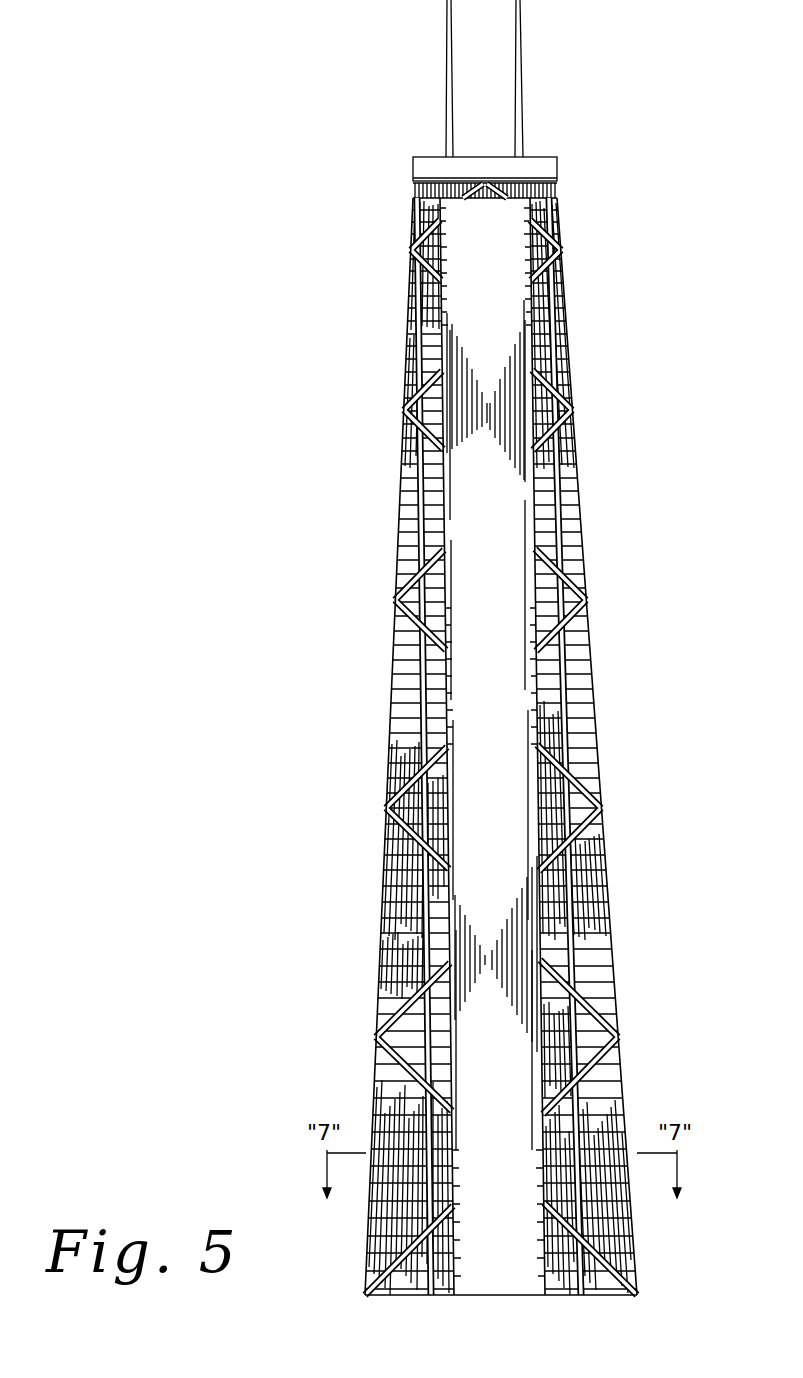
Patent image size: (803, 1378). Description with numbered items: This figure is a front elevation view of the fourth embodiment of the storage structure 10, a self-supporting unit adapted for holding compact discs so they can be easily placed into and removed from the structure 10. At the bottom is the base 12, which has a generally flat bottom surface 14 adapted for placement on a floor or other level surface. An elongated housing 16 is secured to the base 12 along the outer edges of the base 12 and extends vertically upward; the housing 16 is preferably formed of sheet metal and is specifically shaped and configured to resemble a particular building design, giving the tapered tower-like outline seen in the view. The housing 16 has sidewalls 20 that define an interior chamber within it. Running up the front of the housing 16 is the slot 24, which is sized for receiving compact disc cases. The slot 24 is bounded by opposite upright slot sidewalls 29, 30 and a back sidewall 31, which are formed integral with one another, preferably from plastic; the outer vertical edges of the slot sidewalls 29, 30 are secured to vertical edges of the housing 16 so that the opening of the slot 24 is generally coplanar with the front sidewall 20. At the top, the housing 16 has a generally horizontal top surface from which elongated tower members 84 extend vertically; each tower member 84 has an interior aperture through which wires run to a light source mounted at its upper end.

The storage structure 10 is at (499, 656).
The tower members 84 is at (446, 60).
The slot 24 is at (493, 351).
The back sidewall 31 is at (500, 518).
The slot sidewall 29 is at (448, 624).
The slot sidewall 30 is at (538, 637).
The sidewalls 20 is at (392, 842).
The housing 16 is at (607, 840).
The bottom surface 14 is at (418, 1295).
The base 12 is at (537, 1295).